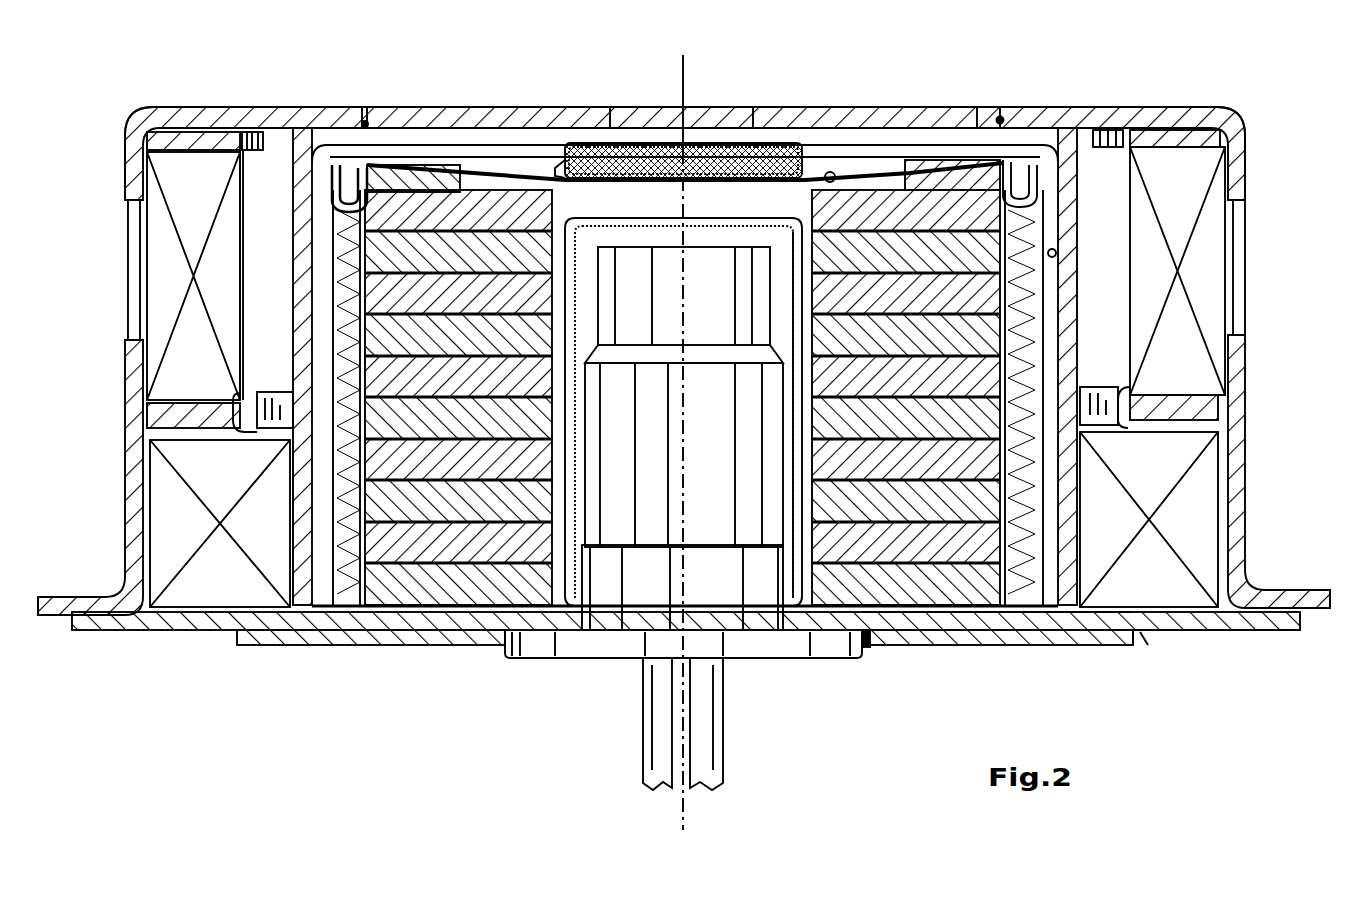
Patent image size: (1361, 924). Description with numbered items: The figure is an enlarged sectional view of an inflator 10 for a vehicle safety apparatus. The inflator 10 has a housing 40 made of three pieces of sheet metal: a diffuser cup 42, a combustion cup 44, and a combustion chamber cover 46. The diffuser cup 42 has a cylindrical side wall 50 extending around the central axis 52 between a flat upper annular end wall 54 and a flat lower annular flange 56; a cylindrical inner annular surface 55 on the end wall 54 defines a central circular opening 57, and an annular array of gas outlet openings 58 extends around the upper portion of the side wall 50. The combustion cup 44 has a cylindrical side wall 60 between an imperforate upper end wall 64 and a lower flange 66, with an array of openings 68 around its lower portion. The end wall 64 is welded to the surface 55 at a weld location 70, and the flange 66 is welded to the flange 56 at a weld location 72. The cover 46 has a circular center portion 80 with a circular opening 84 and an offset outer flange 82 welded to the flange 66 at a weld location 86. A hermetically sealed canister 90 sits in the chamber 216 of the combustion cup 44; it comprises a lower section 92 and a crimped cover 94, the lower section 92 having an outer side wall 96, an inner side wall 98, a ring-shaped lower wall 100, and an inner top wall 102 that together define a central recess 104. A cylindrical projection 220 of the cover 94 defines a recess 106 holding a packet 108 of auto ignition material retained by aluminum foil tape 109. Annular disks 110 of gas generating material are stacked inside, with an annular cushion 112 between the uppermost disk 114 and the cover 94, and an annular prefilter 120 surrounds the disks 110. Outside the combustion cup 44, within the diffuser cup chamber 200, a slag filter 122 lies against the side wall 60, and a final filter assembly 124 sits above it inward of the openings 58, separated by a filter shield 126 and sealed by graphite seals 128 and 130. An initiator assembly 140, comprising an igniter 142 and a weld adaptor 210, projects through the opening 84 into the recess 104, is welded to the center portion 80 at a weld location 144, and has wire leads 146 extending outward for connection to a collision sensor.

The inflator 10 is at (253, 87).
The housing 40 is at (118, 447).
The diffuser cup 42 is at (50, 617).
The combustion cup 44 is at (162, 632).
The combustion chamber cover 46 is at (277, 652).
The side wall 50 is at (1237, 375).
The central axis 52 is at (680, 78).
The upper annular end wall 54 is at (1120, 113).
The inner annular surface 55 is at (368, 128).
The lower annular flange 56 is at (1283, 587).
The central circular opening 57 is at (515, 118).
The gas outlet openings 58 is at (135, 275).
The side wall 60 is at (1063, 278).
The upper end wall 64 is at (945, 130).
The lower annular flange 66 is at (1197, 620).
The openings 68 is at (303, 548).
The weld location 70 is at (997, 110).
The weld location 72 is at (1300, 608).
The center portion 80 is at (978, 623).
The annular outer flange 82 is at (1090, 623).
The circular opening 84 is at (775, 630).
The weld location 86 is at (1137, 633).
The canister 90 is at (882, 170).
The canister lower section 92 is at (797, 423).
The canister cover 94 is at (867, 163).
The outer side wall 96 is at (1077, 248).
The inner side wall 98 is at (795, 333).
The lower wall 100 is at (932, 618).
The inner top wall 102 is at (633, 222).
The central recess 104 is at (666, 235).
The recess 106 is at (767, 140).
The packet of auto ignition material 108 is at (613, 145).
The aluminum foil tape 109 is at (840, 170).
The annular disks of gas generating material 110 is at (838, 585).
The annular cushion 112 is at (973, 173).
The uppermost gas generating disk 114 is at (433, 213).
The annular prefilter 120 is at (1050, 305).
The slag filter 122 is at (1157, 507).
The final filter assembly 124 is at (1185, 177).
The filter shield 126 is at (1218, 432).
The graphite seal 128 is at (1173, 128).
The graphite seal 130 is at (1213, 413).
The initiator assembly 140 is at (605, 698).
The igniter 142 is at (717, 247).
The weld location 144 is at (860, 637).
The wire leads 146 is at (703, 768).
The diffuser cup chamber 200 is at (262, 190).
The weld adaptor 210 is at (590, 648).
The chamber 216 is at (453, 148).
The projection 220 is at (563, 163).